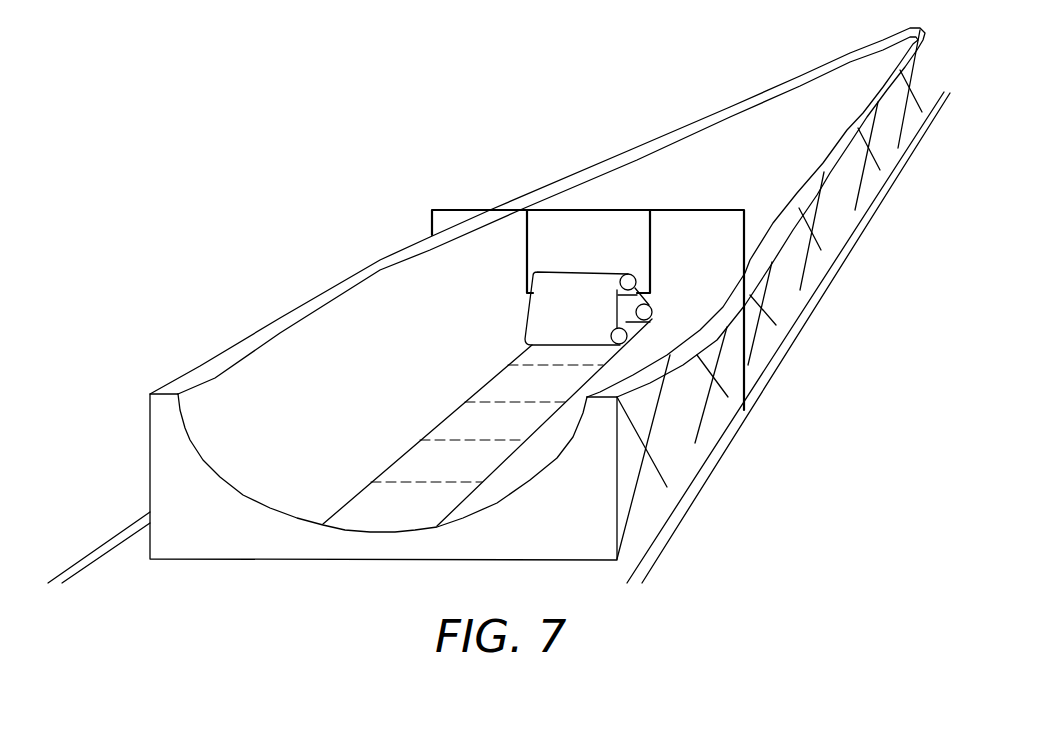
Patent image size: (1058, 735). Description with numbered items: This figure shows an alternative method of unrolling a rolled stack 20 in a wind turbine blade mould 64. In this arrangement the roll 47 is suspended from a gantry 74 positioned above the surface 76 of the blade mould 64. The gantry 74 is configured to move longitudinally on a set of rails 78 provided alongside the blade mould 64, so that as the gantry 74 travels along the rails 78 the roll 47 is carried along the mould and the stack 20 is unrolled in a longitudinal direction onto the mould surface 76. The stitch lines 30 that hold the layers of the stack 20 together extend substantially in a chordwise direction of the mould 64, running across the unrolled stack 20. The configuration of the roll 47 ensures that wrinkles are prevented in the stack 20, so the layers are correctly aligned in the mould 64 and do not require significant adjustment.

The wind turbine blade mould 64 is at (711, 108).
The gantry 74 is at (455, 208).
The roll 47 is at (585, 282).
The surface of the blade mould 76 is at (212, 400).
The stitch lines 30 is at (402, 478).
The stack 20 is at (385, 520).
The rails 78 is at (710, 467).